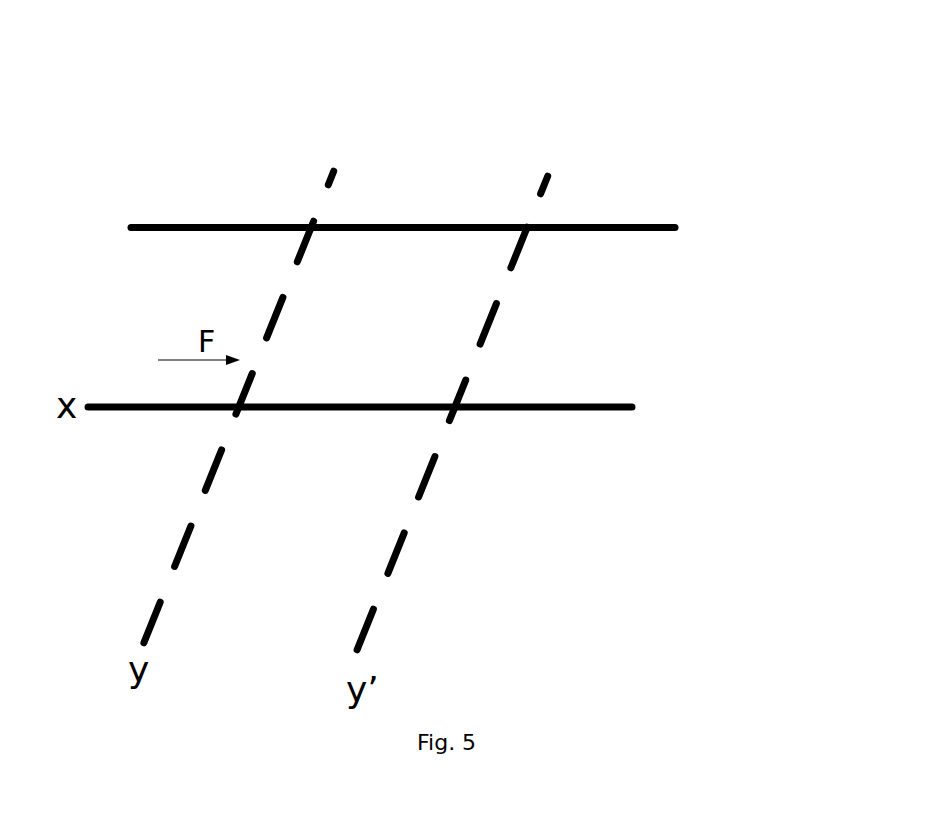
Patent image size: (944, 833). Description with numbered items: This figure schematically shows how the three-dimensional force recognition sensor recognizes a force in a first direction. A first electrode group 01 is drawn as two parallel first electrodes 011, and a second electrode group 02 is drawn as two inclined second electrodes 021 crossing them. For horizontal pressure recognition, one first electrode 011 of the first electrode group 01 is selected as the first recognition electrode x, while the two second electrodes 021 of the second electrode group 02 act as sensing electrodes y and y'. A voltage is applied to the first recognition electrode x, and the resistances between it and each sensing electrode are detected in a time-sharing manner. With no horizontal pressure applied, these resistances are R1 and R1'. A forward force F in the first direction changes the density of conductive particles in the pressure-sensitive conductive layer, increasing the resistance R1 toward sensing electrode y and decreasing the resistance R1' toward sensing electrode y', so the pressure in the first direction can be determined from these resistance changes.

The first electrode group 01 is at (462, 318).
The first electrode 011 is at (630, 231).
The second electrode group 02 is at (346, 334).
The second electrode 021 is at (533, 79).
The resistance between first recognition electrode x and sensing electrode y R1 is at (159, 511).
The resistance between first recognition electrode x and sensing electrode y' R1' is at (276, 523).